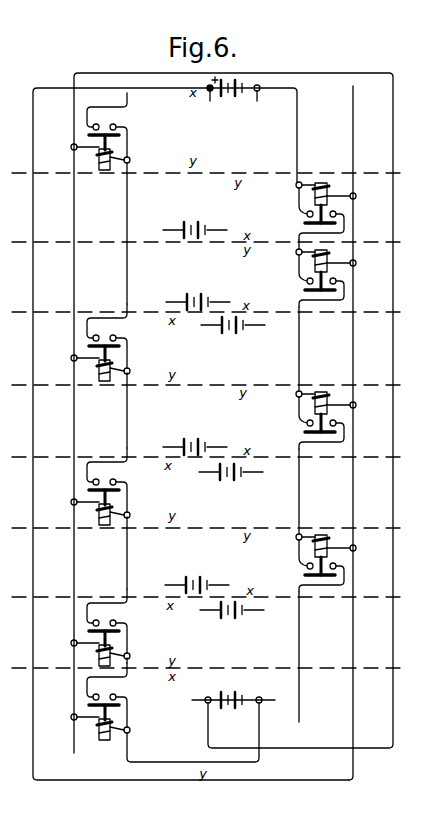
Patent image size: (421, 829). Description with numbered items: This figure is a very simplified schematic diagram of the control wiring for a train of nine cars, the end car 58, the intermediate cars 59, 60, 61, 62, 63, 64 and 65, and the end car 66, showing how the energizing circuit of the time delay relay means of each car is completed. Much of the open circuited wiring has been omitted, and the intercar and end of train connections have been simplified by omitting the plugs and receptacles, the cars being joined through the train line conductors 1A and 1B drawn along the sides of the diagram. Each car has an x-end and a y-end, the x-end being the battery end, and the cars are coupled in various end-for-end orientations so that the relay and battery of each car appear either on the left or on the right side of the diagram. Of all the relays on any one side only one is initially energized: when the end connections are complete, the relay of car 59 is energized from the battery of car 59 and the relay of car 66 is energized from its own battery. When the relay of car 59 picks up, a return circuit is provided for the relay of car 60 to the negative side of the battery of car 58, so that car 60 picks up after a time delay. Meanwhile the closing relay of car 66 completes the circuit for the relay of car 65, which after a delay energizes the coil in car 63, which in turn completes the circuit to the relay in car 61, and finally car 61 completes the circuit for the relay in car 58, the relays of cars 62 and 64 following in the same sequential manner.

The end car 58 is at (203, 139).
The intermediate car 59 is at (189, 211).
The intermediate car 60 is at (191, 281).
The intermediate car 61 is at (196, 362).
The intermediate car 62 is at (196, 427).
The intermediate car 63 is at (198, 504).
The intermediate car 64 is at (196, 564).
The intermediate car 65 is at (196, 646).
The end car 66 is at (163, 736).
The first bus conductor 1A is at (366, 433).
The second bus conductor 1B is at (233, 413).